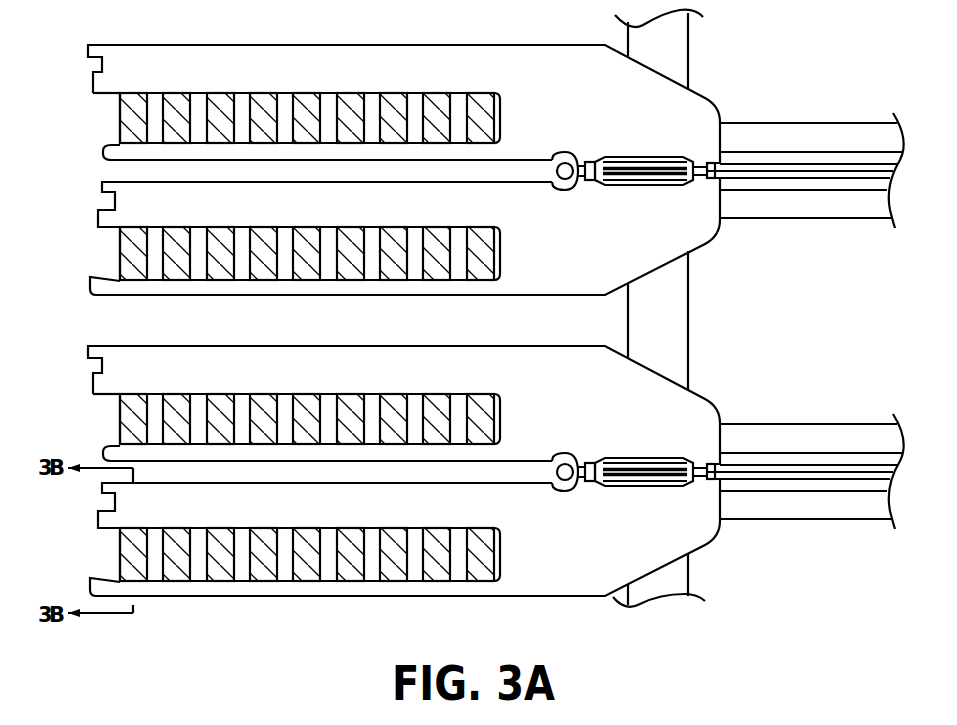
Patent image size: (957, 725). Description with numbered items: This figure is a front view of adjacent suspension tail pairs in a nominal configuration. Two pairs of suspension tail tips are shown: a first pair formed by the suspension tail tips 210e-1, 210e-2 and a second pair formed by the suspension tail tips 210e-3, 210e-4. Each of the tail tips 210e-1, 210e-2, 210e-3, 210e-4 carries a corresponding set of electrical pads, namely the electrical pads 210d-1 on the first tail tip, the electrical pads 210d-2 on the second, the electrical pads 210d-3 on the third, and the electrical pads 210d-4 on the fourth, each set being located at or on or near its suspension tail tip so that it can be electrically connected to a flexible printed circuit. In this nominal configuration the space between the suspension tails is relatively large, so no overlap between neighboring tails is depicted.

The electrical pads 210d-1 is at (113, 116).
The electrical pads 210d-2 is at (113, 251).
The electrical pads 210d-3 is at (259, 420).
The electrical pads 210d-4 is at (259, 554).
The suspension tail tip 210e-1 is at (577, 60).
The suspension tail tip 210e-2 is at (560, 280).
The suspension tail tip 210e-3 is at (404, 384).
The suspension tail tip 210e-4 is at (405, 560).